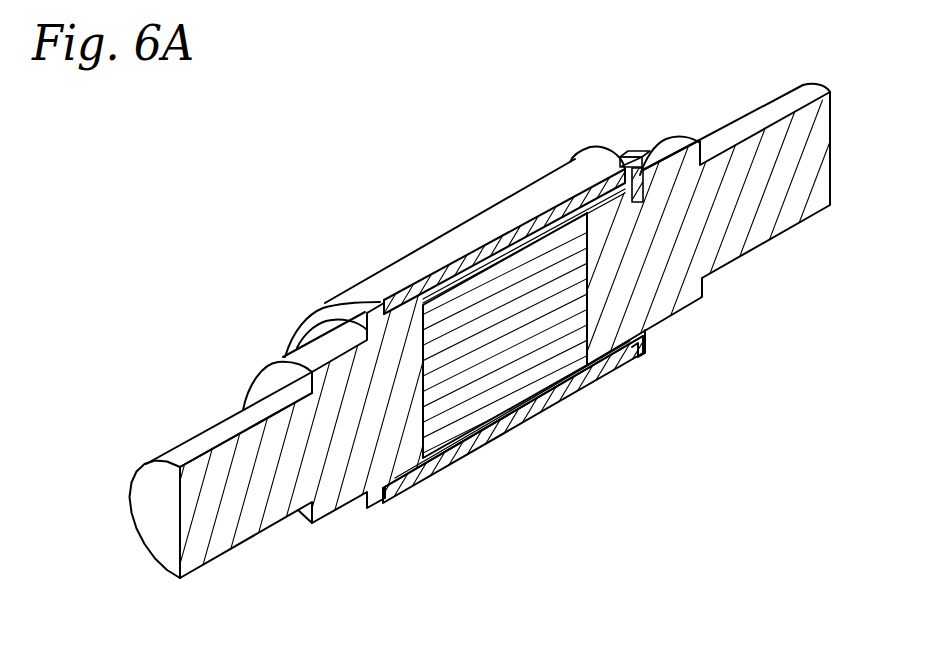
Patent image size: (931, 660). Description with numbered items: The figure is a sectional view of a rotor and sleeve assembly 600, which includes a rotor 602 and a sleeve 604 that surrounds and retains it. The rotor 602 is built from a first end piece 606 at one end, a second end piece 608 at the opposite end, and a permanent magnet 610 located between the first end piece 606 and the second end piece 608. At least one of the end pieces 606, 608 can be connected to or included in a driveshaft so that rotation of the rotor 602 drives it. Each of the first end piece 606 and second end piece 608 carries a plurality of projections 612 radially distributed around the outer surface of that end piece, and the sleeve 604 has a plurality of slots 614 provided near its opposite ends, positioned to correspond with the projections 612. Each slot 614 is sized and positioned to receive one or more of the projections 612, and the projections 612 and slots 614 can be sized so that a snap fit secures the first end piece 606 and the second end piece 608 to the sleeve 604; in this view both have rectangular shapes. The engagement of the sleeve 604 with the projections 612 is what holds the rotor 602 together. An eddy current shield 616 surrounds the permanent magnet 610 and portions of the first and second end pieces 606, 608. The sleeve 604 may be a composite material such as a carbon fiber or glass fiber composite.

The rotor and sleeve assembly 600 is at (303, 200).
The rotor 602 is at (203, 403).
The sleeve 604 is at (535, 212).
The first end piece 606 is at (262, 510).
The second end piece 608 is at (778, 210).
The permanent magnet 610 is at (520, 367).
The projections 612 is at (622, 152).
The slots 614 is at (638, 200).
The eddy current shield 616 is at (490, 433).